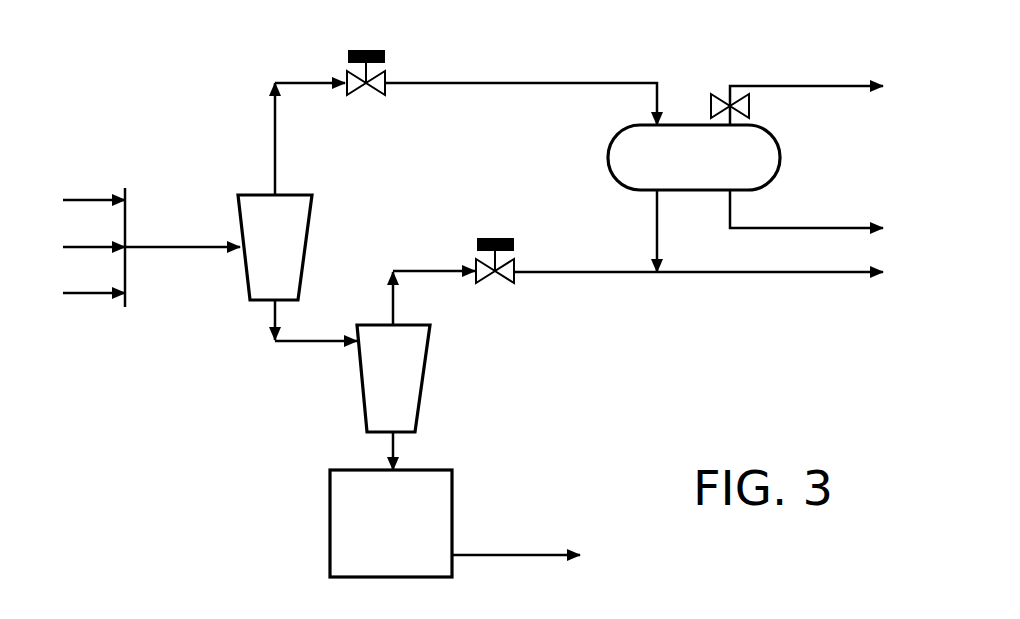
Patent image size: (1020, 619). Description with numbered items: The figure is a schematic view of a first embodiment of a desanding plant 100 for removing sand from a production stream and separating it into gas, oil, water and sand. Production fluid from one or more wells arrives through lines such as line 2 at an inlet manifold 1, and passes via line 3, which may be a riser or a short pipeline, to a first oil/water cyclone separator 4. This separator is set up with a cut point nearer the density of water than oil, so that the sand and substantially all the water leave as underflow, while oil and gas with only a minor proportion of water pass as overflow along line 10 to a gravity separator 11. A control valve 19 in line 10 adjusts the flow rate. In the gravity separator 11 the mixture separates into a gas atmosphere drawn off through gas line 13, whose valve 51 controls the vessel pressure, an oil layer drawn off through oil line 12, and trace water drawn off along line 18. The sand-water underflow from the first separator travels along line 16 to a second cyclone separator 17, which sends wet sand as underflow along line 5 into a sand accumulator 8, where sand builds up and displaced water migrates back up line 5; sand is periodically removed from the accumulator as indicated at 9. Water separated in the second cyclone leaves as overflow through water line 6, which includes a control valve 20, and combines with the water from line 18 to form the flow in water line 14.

The desanding plant 100 is at (600, 51).
The inlet manifold 1 is at (130, 202).
The line 2 is at (88, 198).
The line 3 is at (183, 250).
The cyclone separator 4 is at (312, 224).
The line 10 is at (469, 82).
The control valve 19 is at (367, 50).
The gravity separator 11 is at (606, 154).
The gas line 13 is at (759, 85).
The valve 51 is at (751, 108).
The oil line 12 is at (791, 227).
The line 18 is at (654, 224).
The water line 14 is at (740, 275).
The control valve 20 is at (496, 238).
The water line 6 is at (426, 268).
The underflow line 16 is at (308, 344).
The second cyclone separator 17 is at (431, 355).
The line 5 is at (396, 454).
The sand accumulator 8 is at (328, 484).
The sand removal 9 is at (515, 558).